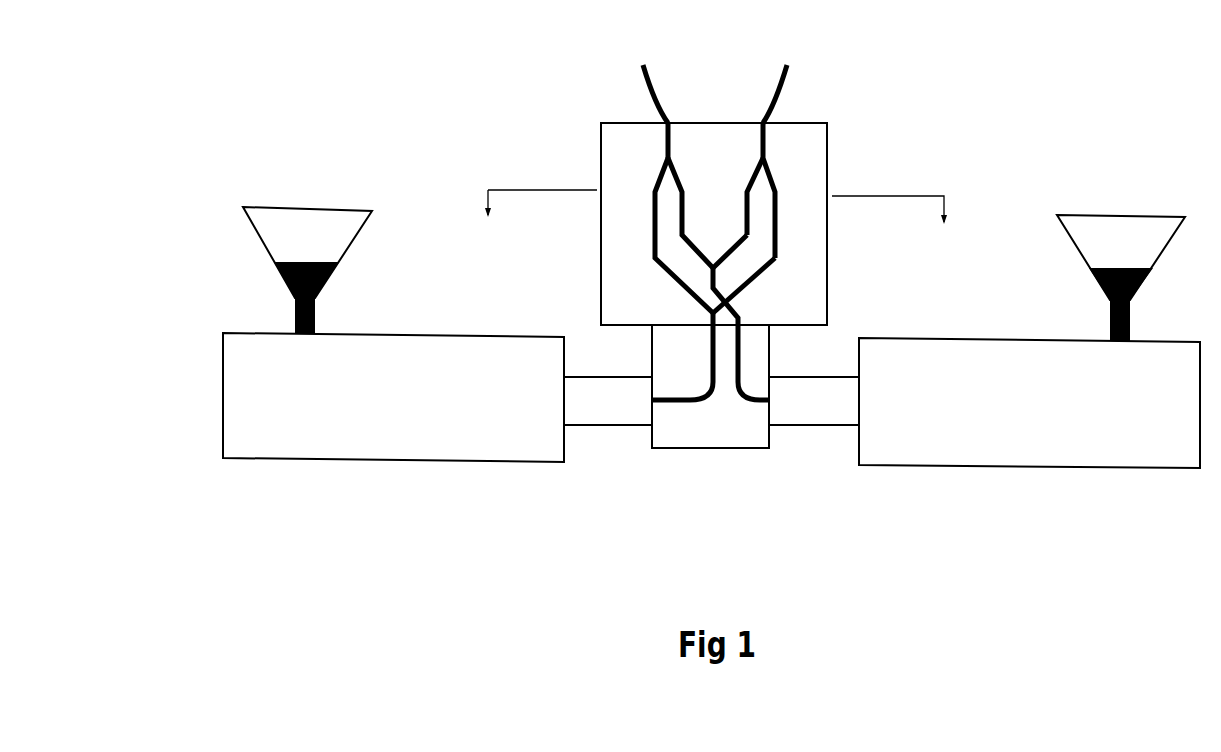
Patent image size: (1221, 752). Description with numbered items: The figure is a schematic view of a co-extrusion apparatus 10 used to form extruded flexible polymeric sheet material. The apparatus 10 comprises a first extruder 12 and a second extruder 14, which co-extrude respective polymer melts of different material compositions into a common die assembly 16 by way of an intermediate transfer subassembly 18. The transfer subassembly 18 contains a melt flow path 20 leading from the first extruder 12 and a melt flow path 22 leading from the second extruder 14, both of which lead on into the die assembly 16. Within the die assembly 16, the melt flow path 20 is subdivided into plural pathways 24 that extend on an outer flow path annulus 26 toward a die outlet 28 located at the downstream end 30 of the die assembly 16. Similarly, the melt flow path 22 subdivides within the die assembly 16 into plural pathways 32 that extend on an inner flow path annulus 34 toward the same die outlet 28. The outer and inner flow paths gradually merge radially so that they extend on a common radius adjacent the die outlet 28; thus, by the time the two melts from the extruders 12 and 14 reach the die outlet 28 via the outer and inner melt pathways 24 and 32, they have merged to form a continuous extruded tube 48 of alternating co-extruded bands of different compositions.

The co-extrusion apparatus 10 is at (560, 520).
The first extruder 12 is at (393, 334).
The second extruder 14 is at (1029, 341).
The die assembly 16 is at (828, 148).
The intermediate transfer subassembly 18 is at (717, 448).
The melt flow path 20 is at (677, 392).
The melt flow path 22 is at (745, 390).
The plural pathways 24 is at (677, 279).
The outer flow path annulus 26 is at (776, 238).
The die outlet 28 is at (667, 143).
The downstream end 30 is at (688, 123).
The plural pathways 32 is at (745, 222).
The inner flow path annulus 34 is at (747, 198).
The continuous extruded tube 48 is at (788, 78).